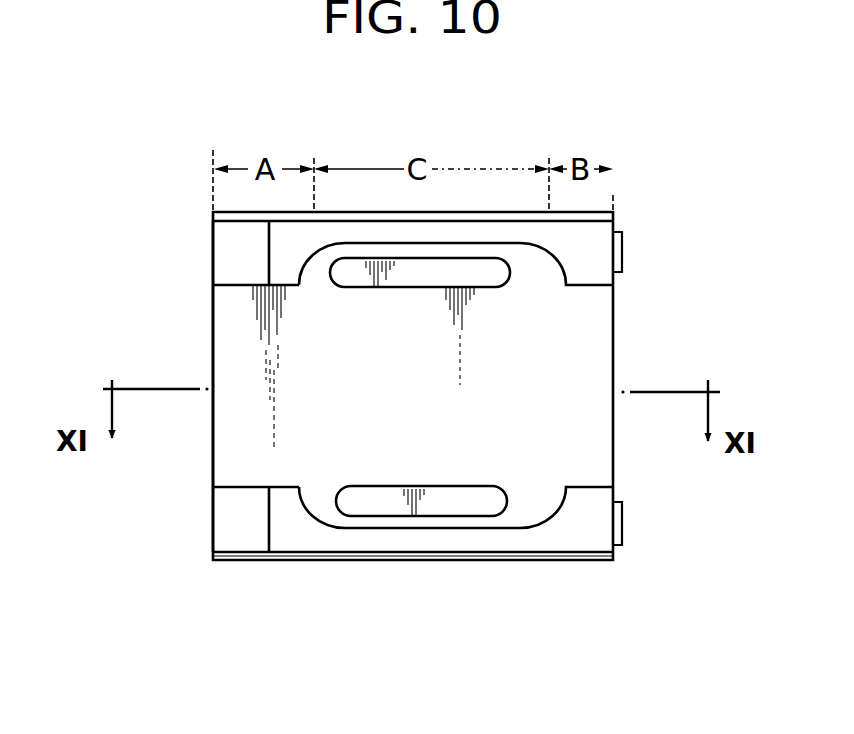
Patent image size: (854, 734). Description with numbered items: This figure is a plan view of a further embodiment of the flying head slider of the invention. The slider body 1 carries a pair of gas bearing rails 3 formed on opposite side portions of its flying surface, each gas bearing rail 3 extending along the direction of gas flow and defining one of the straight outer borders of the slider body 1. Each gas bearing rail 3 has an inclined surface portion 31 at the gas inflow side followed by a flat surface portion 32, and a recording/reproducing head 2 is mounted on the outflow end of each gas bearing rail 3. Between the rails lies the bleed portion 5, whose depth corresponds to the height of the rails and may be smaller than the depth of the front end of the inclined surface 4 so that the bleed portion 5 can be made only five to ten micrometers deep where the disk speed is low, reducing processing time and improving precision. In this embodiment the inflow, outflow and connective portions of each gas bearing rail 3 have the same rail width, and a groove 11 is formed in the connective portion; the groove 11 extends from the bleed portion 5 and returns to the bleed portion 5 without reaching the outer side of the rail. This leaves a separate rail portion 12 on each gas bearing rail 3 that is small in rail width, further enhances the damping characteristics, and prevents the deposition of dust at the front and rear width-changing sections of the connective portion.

The slider body 1 is at (211, 315).
The recording/reproducing head 2 is at (623, 251).
The gas bearing rail 3 is at (558, 566).
The inclined surface 4 is at (249, 544).
The bleed portion 5 is at (467, 449).
The groove 11 is at (501, 520).
The separate rail portion 12 is at (431, 509).
The inclined surface portion 31 is at (213, 517).
The flat surface portion 32 is at (337, 542).